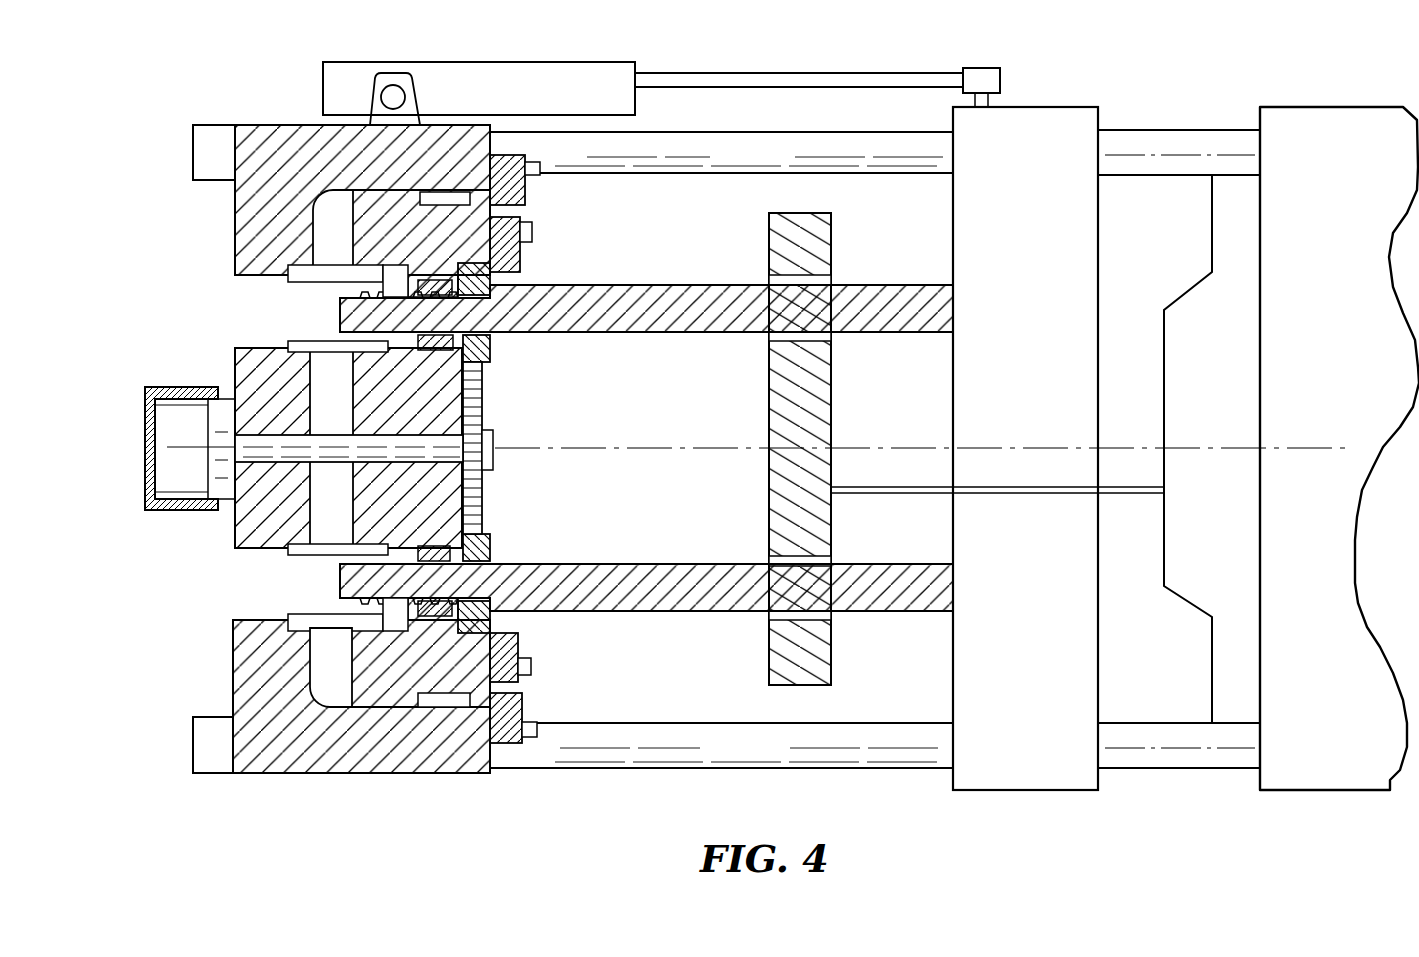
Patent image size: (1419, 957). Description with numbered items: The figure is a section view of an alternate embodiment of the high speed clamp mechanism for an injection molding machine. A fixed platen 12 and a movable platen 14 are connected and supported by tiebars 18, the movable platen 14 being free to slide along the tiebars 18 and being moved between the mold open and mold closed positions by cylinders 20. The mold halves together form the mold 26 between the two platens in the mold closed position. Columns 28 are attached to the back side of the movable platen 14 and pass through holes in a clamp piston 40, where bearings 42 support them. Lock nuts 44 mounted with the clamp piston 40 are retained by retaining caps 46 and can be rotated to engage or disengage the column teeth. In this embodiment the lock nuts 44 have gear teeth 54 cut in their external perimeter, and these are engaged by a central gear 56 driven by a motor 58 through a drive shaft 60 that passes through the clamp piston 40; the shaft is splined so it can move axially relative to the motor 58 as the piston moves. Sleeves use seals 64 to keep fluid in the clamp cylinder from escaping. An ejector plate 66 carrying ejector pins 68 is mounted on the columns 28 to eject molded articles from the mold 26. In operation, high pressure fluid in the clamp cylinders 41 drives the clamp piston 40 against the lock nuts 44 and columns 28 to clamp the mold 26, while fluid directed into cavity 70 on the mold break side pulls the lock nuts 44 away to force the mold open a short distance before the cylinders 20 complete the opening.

The fixed platen 12 is at (1323, 777).
The movable platen 14 is at (1023, 790).
The tiebars 18 is at (1182, 133).
The cylinders 20 is at (588, 68).
The mold 26 is at (1166, 350).
The columns 28 is at (707, 602).
The clamp piston 40 is at (400, 698).
The clamp cylinders 41 is at (327, 670).
The bearing 42 is at (435, 338).
The lock nuts 44 is at (490, 278).
The retaining caps 46 is at (507, 643).
The gear teeth 54 is at (490, 348).
The central gear 56 is at (475, 418).
The motor 58 is at (162, 468).
The drive shaft 60 is at (282, 447).
The seals 64 is at (297, 267).
The ejector plate 66 is at (828, 660).
The ejector pins 68 is at (1027, 493).
The cavity 70 is at (447, 190).